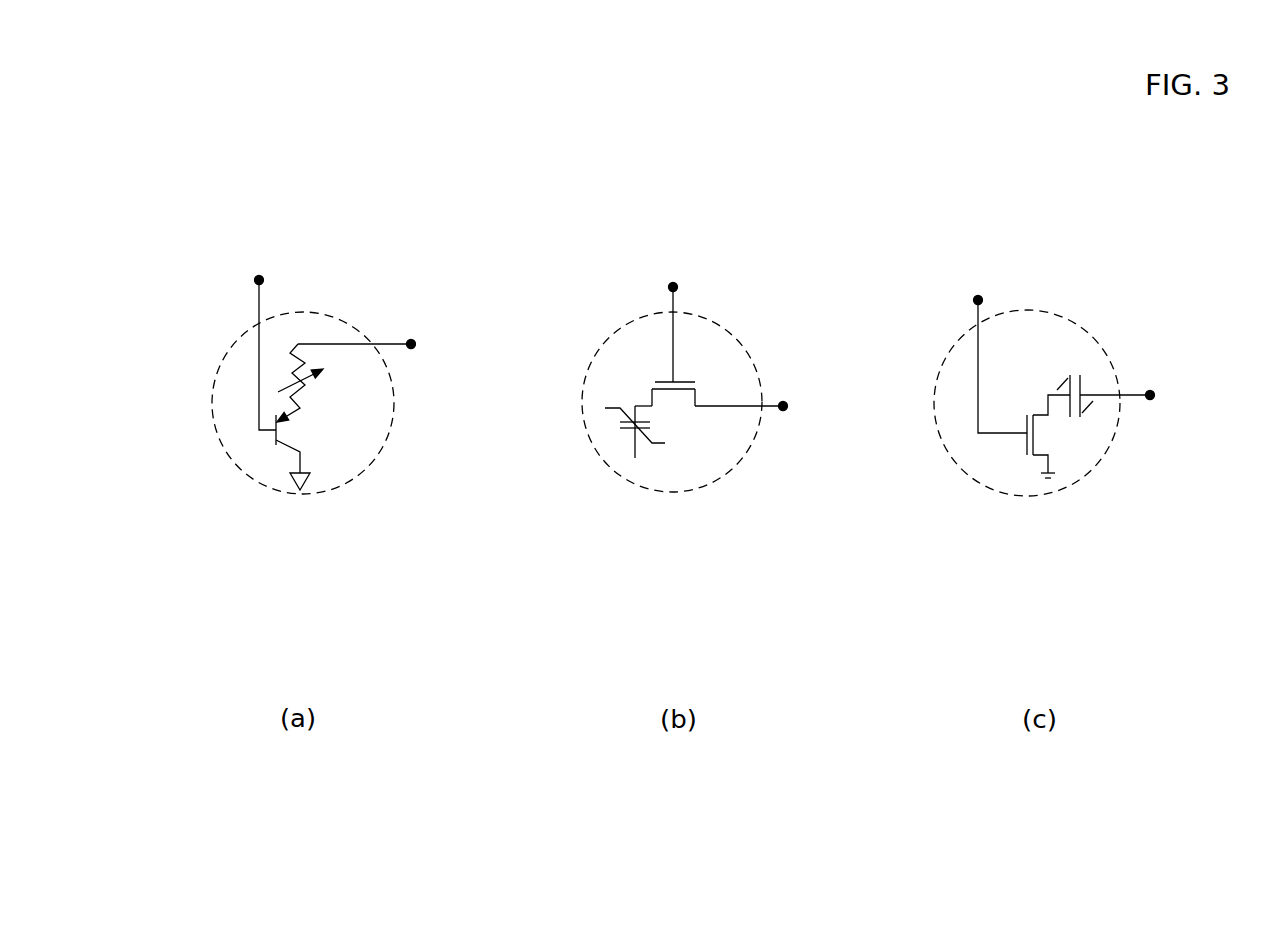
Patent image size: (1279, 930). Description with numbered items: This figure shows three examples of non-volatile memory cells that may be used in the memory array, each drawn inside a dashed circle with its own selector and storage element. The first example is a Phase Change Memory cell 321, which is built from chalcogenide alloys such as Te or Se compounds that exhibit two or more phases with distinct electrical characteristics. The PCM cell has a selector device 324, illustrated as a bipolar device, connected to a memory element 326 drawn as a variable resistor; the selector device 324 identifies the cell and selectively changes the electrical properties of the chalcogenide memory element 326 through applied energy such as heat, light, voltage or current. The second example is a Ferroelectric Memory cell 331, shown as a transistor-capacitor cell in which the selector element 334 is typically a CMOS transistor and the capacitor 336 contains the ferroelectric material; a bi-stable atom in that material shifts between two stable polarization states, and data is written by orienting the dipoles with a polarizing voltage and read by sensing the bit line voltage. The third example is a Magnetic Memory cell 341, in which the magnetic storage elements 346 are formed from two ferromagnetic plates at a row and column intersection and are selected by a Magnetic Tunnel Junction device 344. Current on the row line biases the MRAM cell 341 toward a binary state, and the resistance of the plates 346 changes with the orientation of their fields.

The Phase Change Memory cell 321 is at (383, 190).
The selector device 324 is at (270, 465).
The memory element 326 is at (344, 382).
The Ferroelectric Memory cell 331 is at (735, 337).
The selector element 334 is at (698, 440).
The capacitor 336 is at (637, 478).
The Magnetic Memory cell 341 is at (1113, 190).
The Magnetic Tunnel Junction device 344 is at (1025, 485).
The magnetic storage element 346 is at (1090, 450).